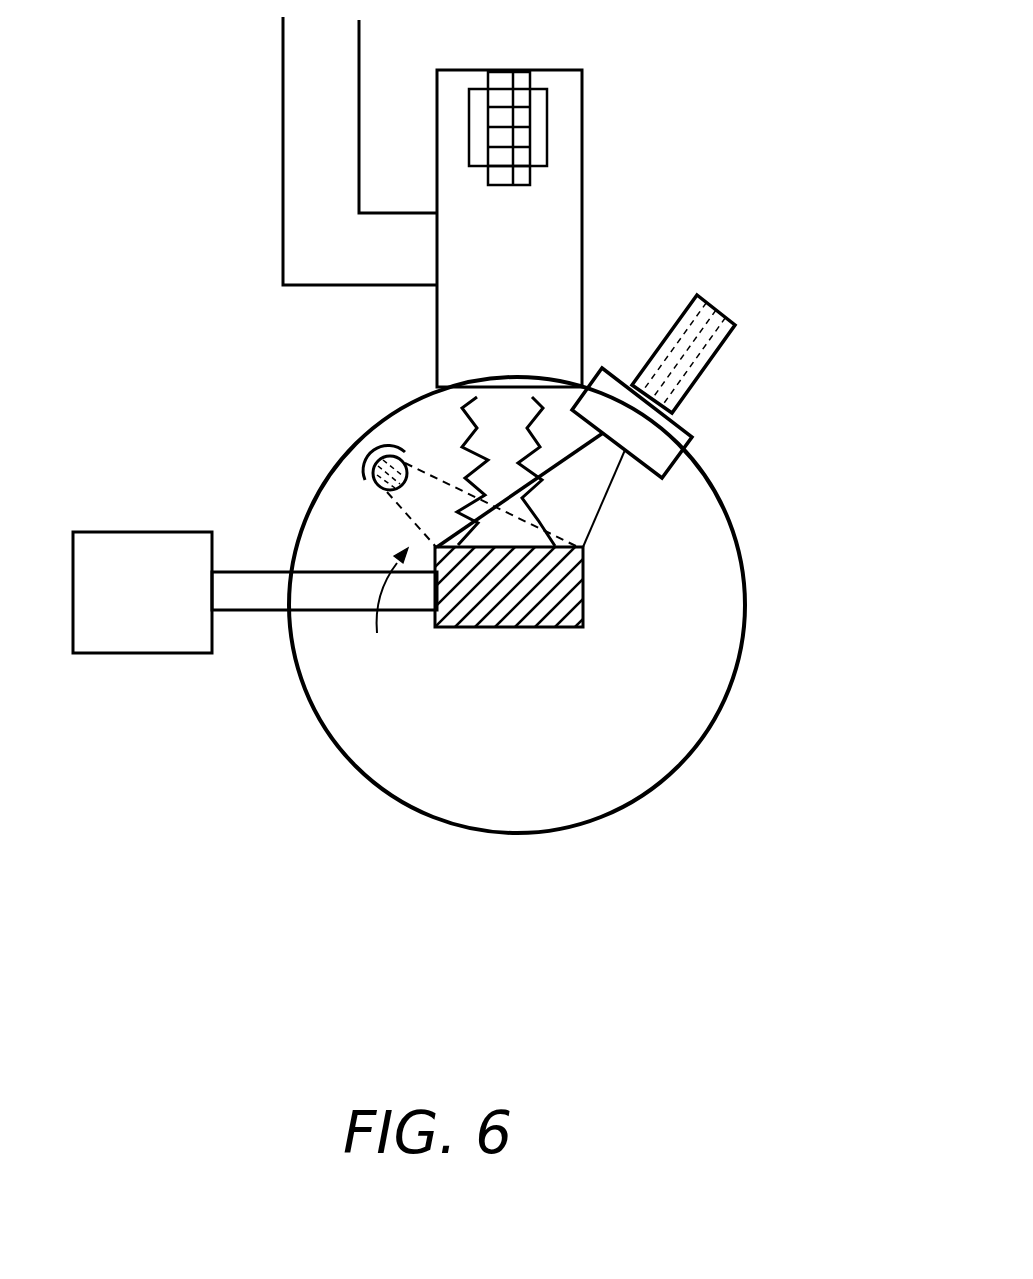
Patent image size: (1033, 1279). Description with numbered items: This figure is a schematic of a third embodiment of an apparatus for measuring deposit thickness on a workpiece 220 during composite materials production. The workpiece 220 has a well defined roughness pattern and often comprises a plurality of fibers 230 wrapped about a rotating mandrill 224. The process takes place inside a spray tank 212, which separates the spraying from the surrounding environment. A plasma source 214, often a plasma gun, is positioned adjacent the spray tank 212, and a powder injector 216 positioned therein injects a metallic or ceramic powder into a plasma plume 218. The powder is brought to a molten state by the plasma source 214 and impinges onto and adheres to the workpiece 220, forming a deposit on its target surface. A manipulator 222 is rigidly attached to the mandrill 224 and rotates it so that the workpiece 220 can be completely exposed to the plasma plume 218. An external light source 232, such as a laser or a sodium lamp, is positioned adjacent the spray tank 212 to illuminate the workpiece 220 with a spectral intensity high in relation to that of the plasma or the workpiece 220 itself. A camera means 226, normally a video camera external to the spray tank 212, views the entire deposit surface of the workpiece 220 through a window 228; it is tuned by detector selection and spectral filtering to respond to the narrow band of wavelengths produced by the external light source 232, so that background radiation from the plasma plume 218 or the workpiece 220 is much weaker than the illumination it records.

The spray tank 212 is at (743, 570).
The plasma source 214 is at (565, 280).
The powder injector 216 is at (528, 125).
The plasma plume 218 is at (500, 478).
The workpiece 220 is at (583, 592).
The manipulator 222 is at (157, 653).
The mandrill 224 is at (427, 612).
The camera means 226 is at (675, 363).
The window 228 is at (692, 440).
The fibers 230 is at (547, 567).
The external light source 232 is at (367, 465).